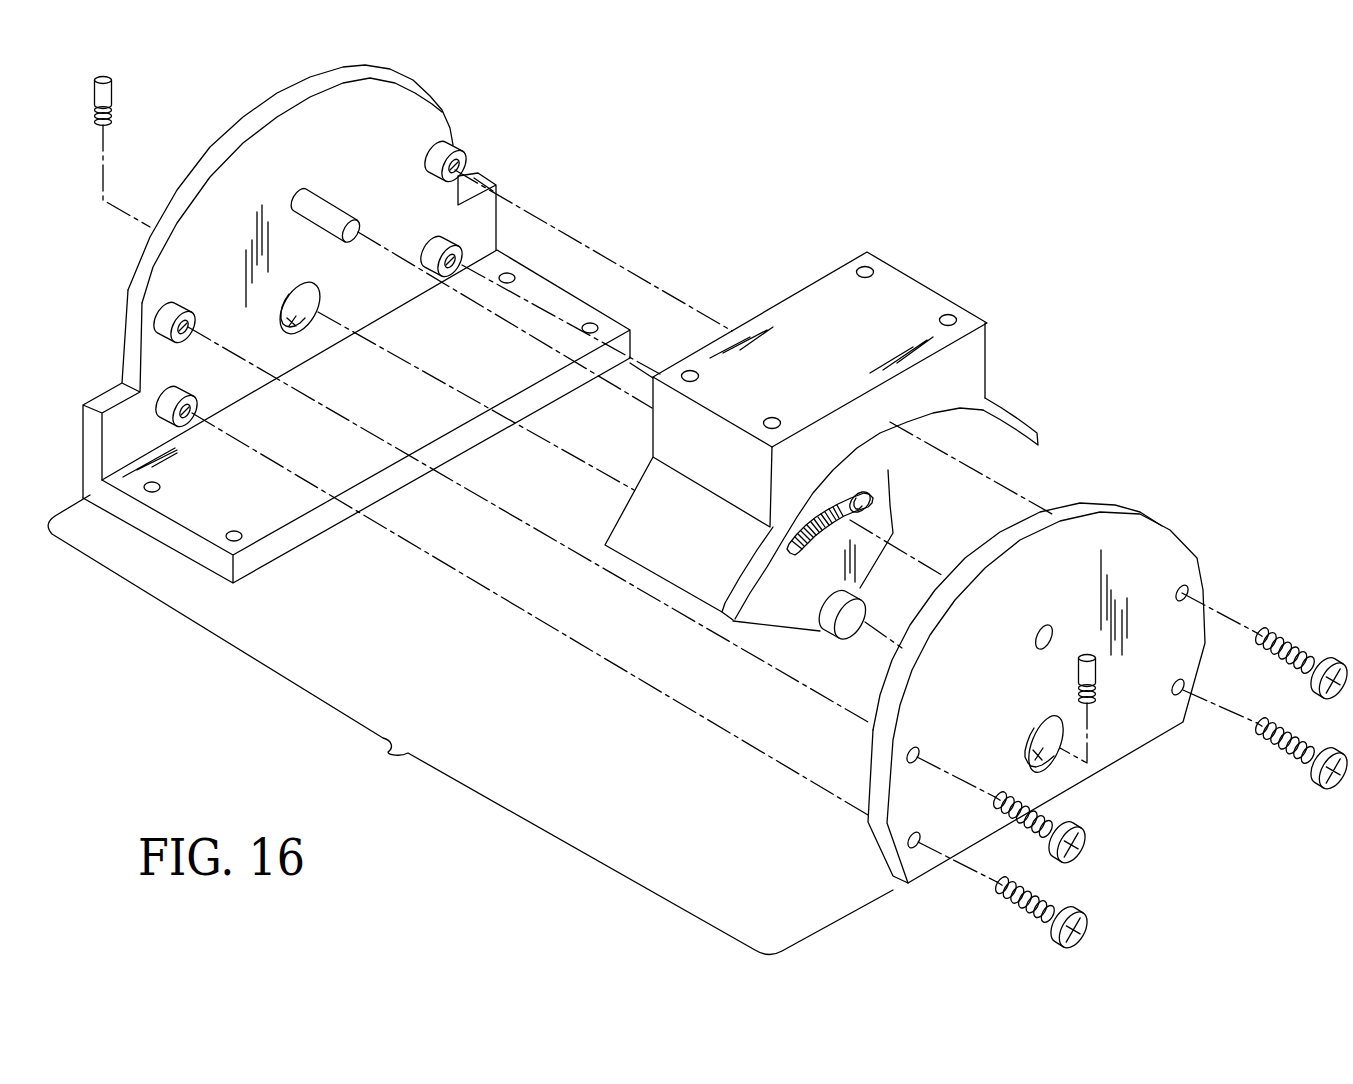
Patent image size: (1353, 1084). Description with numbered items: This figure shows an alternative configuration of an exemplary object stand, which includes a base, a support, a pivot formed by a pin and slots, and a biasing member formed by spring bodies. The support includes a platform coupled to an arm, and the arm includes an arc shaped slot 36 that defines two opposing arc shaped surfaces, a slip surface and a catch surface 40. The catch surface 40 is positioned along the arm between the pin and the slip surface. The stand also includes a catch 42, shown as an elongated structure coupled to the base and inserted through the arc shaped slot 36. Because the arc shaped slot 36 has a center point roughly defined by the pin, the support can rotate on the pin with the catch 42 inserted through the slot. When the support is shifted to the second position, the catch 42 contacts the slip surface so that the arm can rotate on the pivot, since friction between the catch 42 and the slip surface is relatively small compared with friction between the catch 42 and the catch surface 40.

The catch 42 is at (340, 215).
The catch surface 40 is at (808, 525).
The arc shaped slot 36 is at (866, 501).